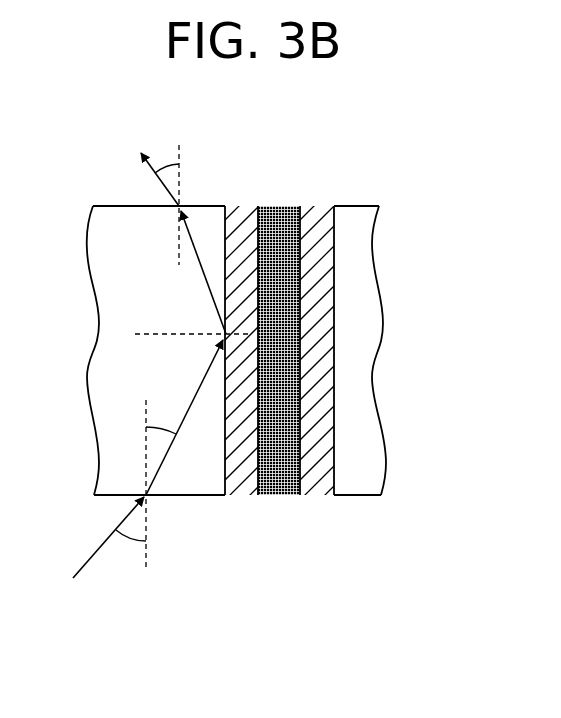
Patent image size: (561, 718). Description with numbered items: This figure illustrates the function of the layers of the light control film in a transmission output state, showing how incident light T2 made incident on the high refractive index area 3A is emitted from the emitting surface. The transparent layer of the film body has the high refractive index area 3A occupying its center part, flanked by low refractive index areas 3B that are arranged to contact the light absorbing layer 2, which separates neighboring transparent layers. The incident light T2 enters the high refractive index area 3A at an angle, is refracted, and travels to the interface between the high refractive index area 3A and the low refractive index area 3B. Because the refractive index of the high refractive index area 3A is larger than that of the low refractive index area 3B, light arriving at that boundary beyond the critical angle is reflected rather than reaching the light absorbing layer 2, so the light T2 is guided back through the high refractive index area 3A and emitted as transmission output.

The high refractive index area 3A is at (122, 218).
The low refractive index area 3B is at (240, 210).
The light absorbing layer 2 is at (278, 495).
The incident light T2 is at (80, 573).